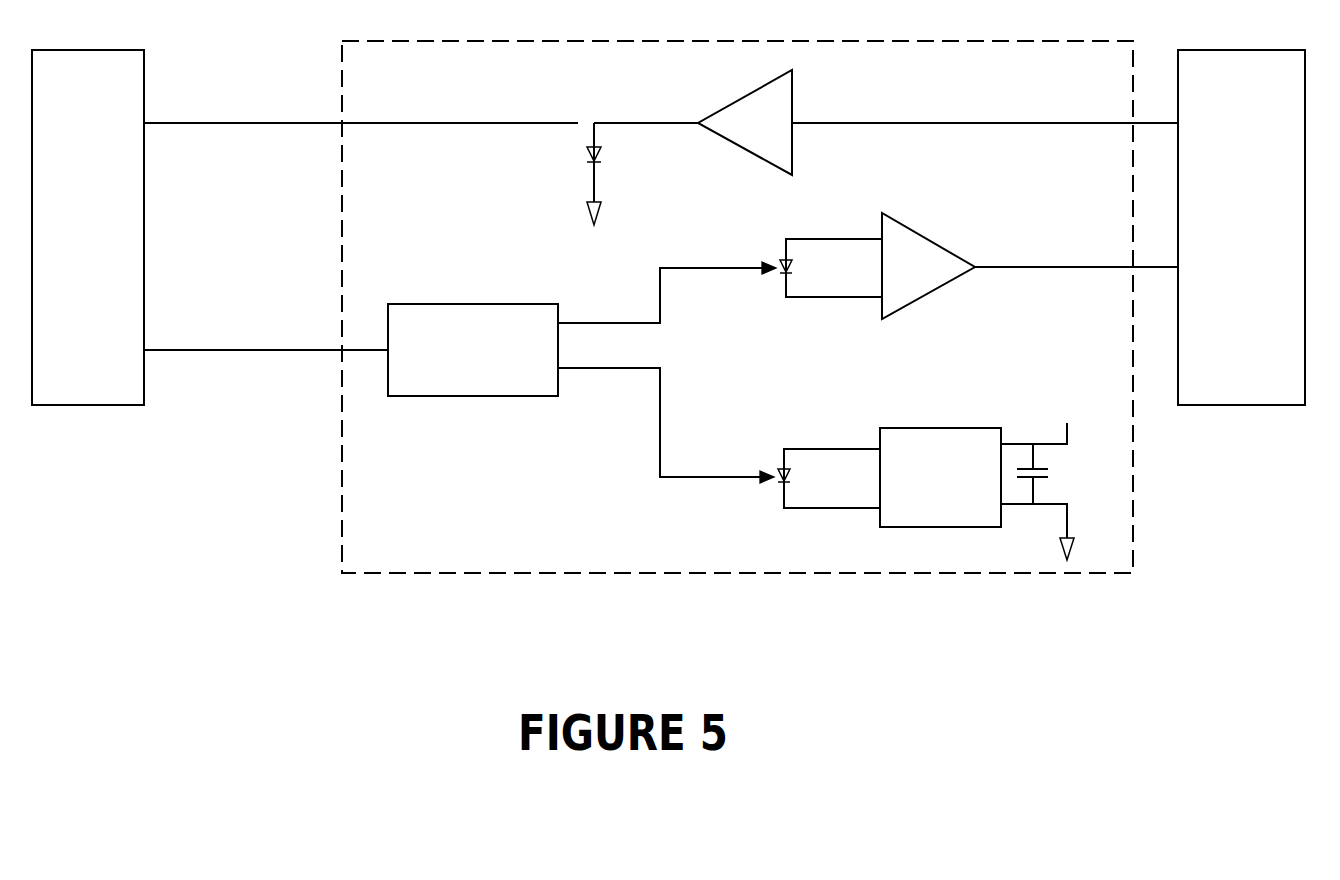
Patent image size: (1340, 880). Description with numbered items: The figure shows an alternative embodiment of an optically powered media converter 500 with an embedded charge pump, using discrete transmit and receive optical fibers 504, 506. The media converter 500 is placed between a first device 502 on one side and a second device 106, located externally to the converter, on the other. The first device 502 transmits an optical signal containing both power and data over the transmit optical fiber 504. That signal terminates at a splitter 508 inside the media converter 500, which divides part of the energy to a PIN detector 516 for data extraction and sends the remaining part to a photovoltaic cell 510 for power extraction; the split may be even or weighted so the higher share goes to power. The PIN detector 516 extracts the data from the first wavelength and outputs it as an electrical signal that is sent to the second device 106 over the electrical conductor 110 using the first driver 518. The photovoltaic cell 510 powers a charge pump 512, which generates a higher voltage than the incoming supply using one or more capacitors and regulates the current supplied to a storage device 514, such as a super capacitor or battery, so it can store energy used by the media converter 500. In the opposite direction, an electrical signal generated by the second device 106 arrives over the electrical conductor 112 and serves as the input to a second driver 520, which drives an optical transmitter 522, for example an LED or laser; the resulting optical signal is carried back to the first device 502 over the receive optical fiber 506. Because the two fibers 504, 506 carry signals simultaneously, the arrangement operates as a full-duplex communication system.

The first device 502 is at (88, 227).
The second device 106 is at (1241, 227).
The optically powered media converter 500 is at (737, 307).
The transmit optical fiber 504 is at (245, 350).
The receive optical fiber 506 is at (252, 123).
The splitter 508 is at (582, 372).
The photovoltaic cell 510 is at (775, 474).
The charge pump 512 is at (892, 477).
The storage device 514 is at (1047, 477).
The PIN detector 516 is at (777, 265).
The first driver 518 is at (930, 237).
The second driver 520 is at (735, 98).
The optical transmitter 522 is at (600, 150).
The electrical conductor 110 is at (1033, 267).
The electrical conductor 112 is at (1033, 123).